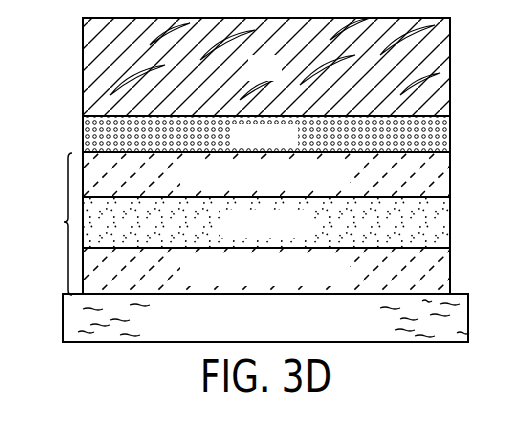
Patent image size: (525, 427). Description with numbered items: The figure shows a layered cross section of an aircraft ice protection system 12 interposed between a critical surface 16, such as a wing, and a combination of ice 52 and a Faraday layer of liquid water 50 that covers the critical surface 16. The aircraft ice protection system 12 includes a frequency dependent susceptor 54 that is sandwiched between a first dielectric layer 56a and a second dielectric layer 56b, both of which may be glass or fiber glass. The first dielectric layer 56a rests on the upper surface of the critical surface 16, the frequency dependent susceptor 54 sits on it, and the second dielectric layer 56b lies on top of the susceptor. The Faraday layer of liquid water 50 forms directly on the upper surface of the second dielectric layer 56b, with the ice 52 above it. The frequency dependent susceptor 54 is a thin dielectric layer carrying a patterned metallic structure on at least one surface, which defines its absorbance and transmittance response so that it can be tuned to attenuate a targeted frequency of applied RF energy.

The aircraft ice protection system 12 is at (53, 224).
The critical surface 16 is at (460, 318).
The Faraday layer of liquid water 50 is at (445, 132).
The ice 52 is at (445, 70).
The frequency dependent susceptor 54 is at (443, 222).
The first dielectric layer 56a is at (443, 272).
The second dielectric layer 56b is at (443, 175).